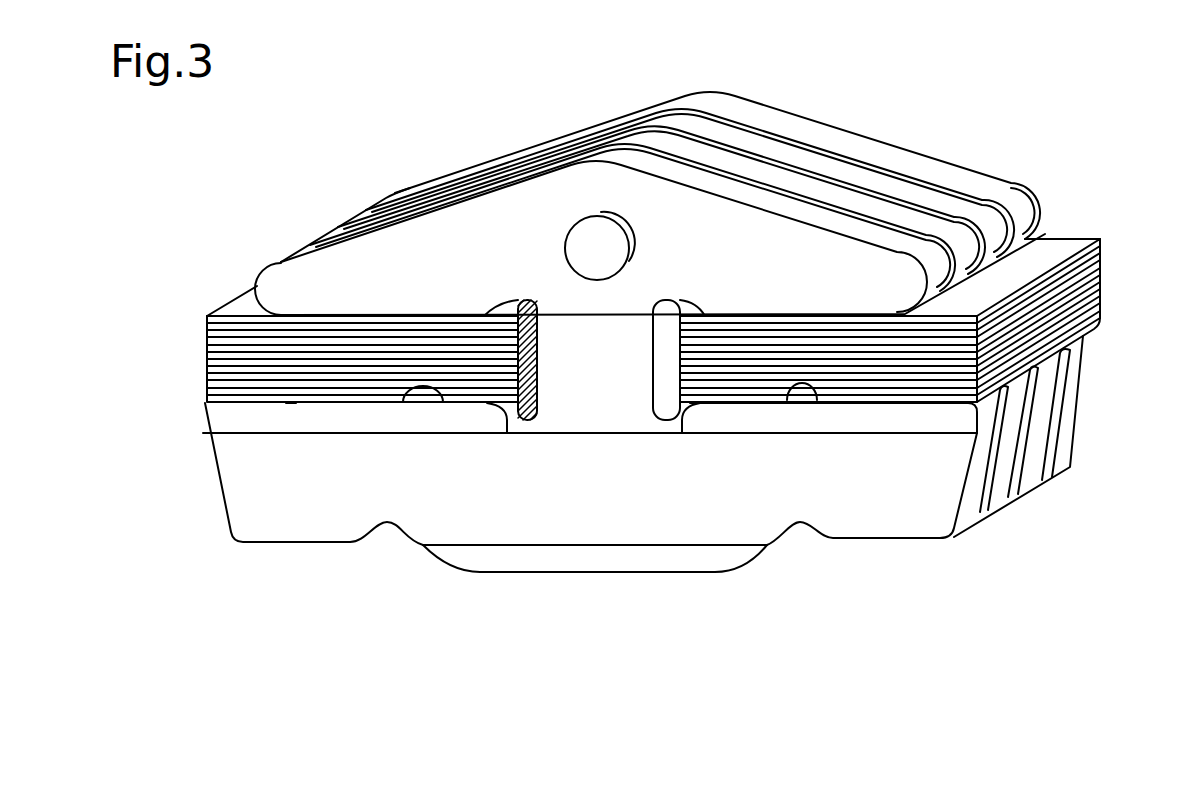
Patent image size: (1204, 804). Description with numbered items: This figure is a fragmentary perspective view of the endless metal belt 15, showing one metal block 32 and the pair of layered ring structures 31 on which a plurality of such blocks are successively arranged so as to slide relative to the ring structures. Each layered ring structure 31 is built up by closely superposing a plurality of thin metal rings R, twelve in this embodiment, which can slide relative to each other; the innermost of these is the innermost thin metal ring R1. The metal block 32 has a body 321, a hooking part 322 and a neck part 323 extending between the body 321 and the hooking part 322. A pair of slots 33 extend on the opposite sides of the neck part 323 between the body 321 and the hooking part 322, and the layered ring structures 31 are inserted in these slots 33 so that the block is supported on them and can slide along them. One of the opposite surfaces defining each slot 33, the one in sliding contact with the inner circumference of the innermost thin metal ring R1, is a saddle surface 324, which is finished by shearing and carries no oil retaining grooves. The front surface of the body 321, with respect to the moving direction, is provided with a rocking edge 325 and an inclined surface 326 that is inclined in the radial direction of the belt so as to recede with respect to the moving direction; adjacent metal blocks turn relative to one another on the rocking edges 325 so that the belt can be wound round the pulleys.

The electromagnetic drive unit 15 is at (809, 72).
The metal block 32 is at (939, 255).
The hooking part 322 is at (807, 263).
The neck part 323 is at (613, 360).
The layered ring structure 31 is at (197, 320).
The thin metal ring R is at (230, 333).
The slot 33 is at (520, 410).
The rocking edge 325 is at (323, 437).
The inclined surface 326 is at (858, 512).
The saddle surface 324 is at (447, 400).
The innermost thin metal ring R1 is at (290, 403).
The body 321 is at (945, 422).